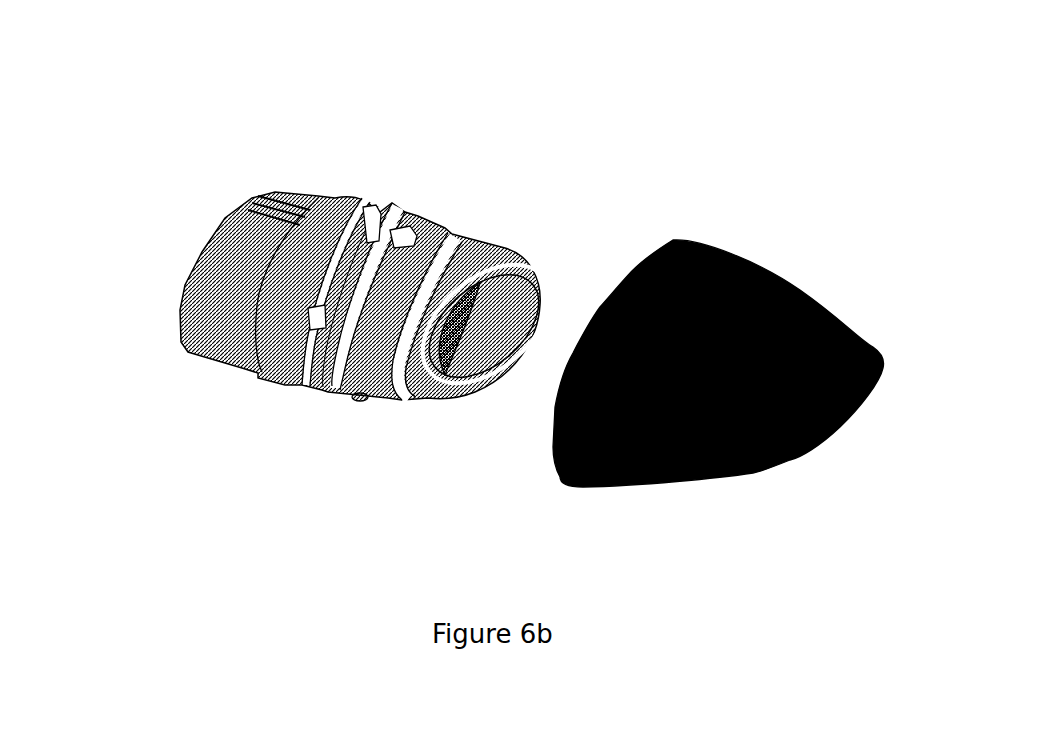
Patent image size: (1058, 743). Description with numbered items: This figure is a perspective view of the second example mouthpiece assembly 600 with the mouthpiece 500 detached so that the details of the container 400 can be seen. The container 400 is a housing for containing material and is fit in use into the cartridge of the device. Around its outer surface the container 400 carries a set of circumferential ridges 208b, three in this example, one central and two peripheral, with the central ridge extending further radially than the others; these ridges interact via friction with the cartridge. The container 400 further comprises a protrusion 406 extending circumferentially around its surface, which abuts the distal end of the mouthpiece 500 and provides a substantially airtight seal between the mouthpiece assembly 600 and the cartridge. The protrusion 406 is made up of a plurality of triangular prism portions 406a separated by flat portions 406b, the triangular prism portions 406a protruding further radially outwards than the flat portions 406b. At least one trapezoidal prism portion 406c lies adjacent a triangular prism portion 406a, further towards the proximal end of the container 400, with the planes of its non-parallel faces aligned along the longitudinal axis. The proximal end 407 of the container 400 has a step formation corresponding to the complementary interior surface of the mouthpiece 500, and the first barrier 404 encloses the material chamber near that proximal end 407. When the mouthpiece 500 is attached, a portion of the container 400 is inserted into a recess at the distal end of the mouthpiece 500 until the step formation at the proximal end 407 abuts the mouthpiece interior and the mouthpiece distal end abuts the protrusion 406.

The mouthpiece assembly 600 is at (550, 74).
The container 400 is at (258, 486).
The circumferential ridges 208b is at (339, 198).
The protrusion 406 is at (415, 228).
The triangular prism portions 406a is at (383, 212).
The flat portions 406b is at (338, 278).
The trapezoidal prism portion 406c is at (410, 230).
The proximal end 407 is at (533, 277).
The first barrier 404 is at (455, 335).
The mouthpiece 500 is at (736, 557).